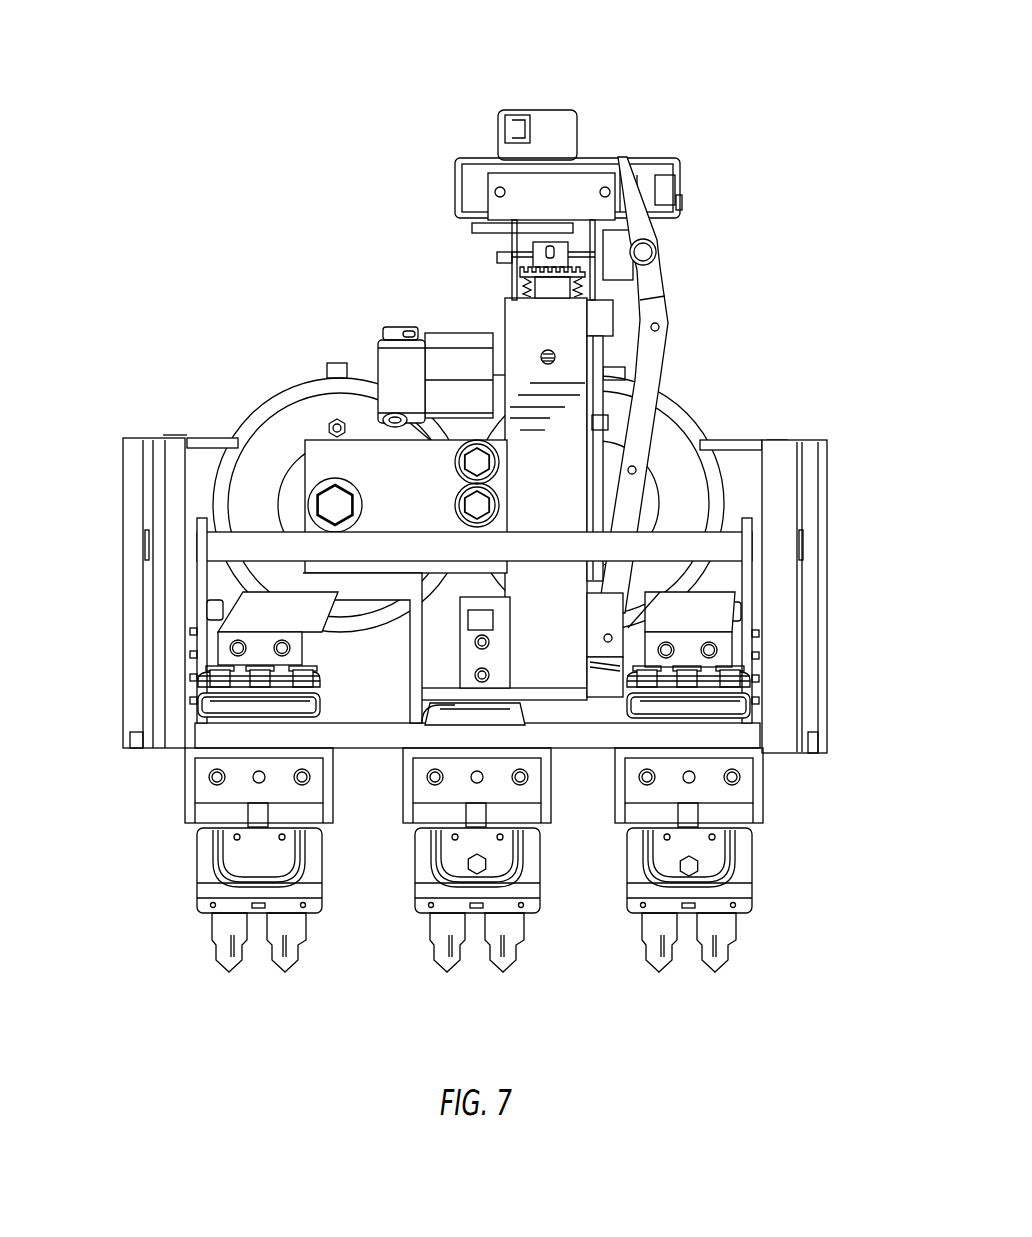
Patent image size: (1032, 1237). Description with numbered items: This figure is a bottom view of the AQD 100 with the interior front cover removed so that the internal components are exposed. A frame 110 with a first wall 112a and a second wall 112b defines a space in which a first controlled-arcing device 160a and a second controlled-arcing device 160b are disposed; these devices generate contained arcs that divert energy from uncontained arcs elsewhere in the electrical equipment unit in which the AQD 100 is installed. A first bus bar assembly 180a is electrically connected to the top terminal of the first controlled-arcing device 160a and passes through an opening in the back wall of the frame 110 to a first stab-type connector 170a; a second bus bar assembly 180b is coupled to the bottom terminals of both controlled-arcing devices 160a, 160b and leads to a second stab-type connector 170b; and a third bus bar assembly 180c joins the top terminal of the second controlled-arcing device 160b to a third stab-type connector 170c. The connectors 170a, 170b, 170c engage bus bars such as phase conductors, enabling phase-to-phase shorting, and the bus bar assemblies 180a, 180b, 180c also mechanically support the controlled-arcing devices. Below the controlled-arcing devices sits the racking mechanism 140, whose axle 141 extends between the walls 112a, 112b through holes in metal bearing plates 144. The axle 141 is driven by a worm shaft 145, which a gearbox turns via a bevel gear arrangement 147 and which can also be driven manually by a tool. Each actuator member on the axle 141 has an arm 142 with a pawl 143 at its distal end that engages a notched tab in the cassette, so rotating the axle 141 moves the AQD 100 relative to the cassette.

The AQD 100 is at (707, 72).
The frame 110 is at (745, 436).
The first wall 112a is at (160, 745).
The second wall 112b is at (792, 745).
The racking mechanism 140 is at (425, 245).
The axle 141 is at (748, 547).
The arm 142 is at (200, 568).
The pawl 143 is at (205, 608).
The metal bearing plate 144 is at (150, 465).
The worm shaft 145 is at (550, 290).
The bevel gear arrangement 147 is at (522, 287).
The first controlled-arcing device 160a is at (330, 388).
The second controlled-arcing device 160b is at (698, 420).
The first stab-type connector 170a is at (293, 925).
The second stab-type connector 170b is at (512, 925).
The third stab-type connector 170c is at (730, 928).
The first bus bar assembly 180a is at (220, 652).
The second bus bar assembly 180b is at (420, 640).
The third bus bar assembly 180c is at (735, 660).